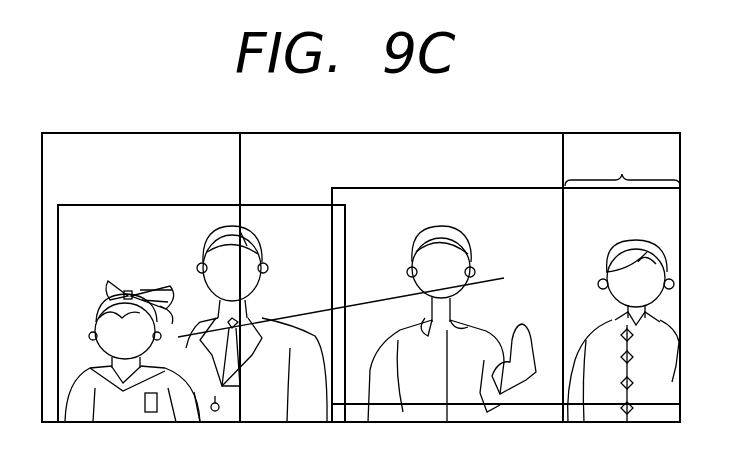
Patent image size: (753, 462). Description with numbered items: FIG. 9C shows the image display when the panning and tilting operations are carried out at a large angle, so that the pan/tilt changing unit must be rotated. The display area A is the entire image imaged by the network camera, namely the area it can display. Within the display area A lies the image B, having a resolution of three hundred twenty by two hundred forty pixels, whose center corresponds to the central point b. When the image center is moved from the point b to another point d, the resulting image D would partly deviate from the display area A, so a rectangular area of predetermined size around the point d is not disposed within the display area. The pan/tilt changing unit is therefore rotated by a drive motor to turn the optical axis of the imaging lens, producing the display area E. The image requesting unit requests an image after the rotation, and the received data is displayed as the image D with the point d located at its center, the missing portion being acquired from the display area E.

The display area A is at (361, 263).
The image B is at (201, 298).
The image D is at (506, 290).
The display area E is at (621, 265).
The central point b is at (178, 337).
The point d is at (478, 284).